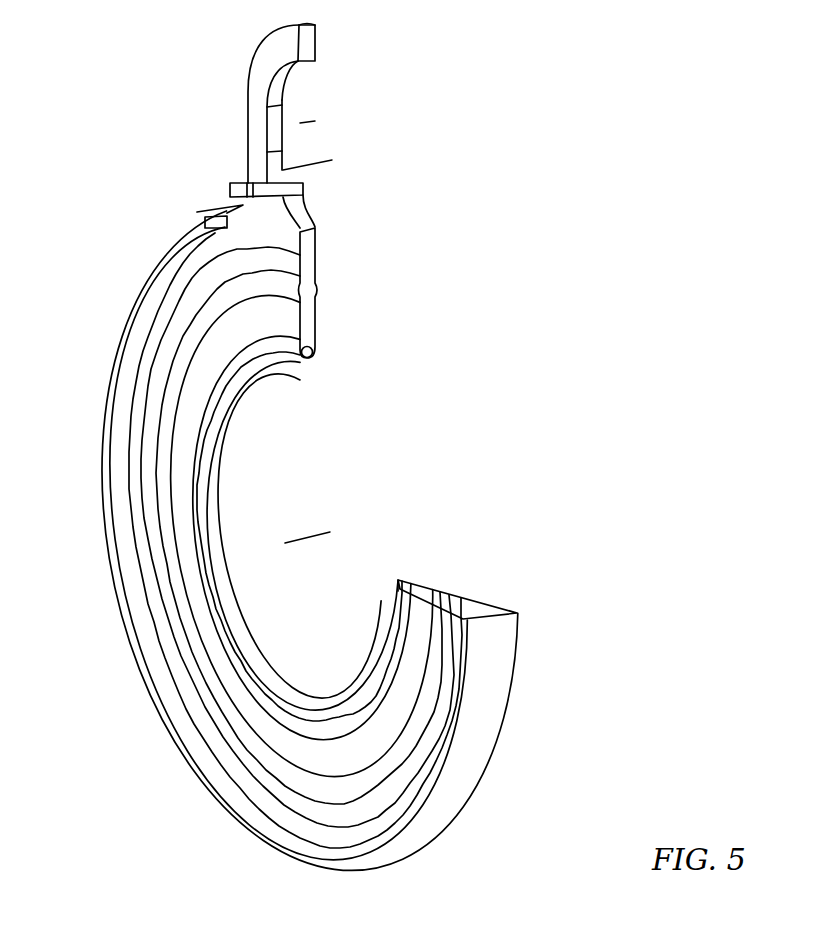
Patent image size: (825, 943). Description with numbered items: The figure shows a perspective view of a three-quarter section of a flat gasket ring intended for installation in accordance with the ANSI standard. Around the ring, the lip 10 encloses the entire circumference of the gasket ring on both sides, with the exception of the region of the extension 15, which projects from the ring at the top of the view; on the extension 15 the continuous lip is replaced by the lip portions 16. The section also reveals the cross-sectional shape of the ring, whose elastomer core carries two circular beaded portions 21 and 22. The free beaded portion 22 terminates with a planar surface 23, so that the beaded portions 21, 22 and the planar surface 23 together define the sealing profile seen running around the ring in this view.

The lip 10 is at (505, 633).
The extension 15 is at (260, 85).
The lip portions 16 is at (247, 183).
The circular beaded portion 21 is at (320, 292).
The free beaded portion 22 is at (318, 358).
The planar surface 23 is at (223, 495).